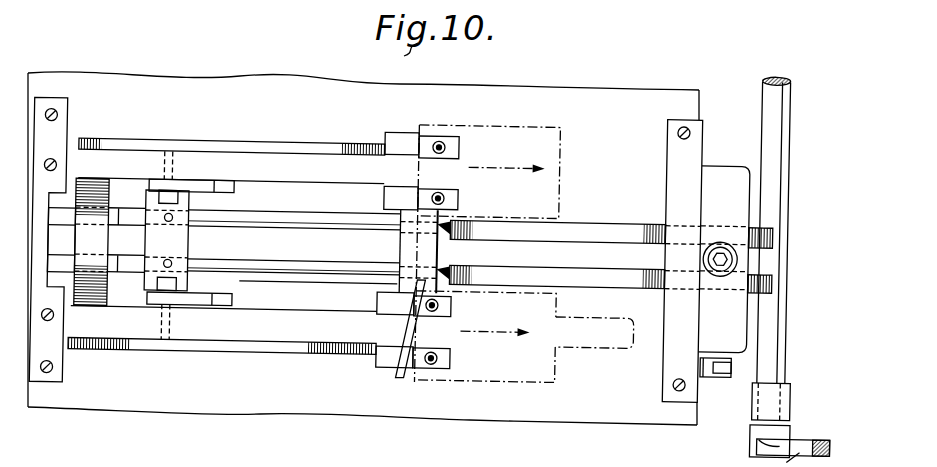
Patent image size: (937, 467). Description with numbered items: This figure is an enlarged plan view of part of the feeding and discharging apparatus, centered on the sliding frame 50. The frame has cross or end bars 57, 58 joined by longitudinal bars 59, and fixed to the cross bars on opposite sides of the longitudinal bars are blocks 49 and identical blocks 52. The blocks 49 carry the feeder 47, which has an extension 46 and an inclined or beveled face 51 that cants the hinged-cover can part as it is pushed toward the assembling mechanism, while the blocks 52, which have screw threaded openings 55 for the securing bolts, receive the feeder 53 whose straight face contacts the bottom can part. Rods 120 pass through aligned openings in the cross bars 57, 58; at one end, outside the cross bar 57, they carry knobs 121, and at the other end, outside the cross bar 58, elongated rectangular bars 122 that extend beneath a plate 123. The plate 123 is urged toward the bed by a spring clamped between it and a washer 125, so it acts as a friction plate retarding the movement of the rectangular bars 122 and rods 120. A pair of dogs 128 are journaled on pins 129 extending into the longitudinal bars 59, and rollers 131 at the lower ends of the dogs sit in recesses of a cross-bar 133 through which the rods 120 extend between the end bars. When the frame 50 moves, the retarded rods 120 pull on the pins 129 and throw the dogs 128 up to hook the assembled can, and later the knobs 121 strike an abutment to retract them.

The extension 46 is at (623, 345).
The feeder 47 is at (530, 363).
The blocks 49 is at (393, 355).
The sliding frame 50 is at (228, 347).
The beveled face 51 is at (403, 333).
The blocks 52 is at (392, 193).
The feeder 53 is at (535, 148).
The screw threaded openings 55 is at (435, 360).
The cross bar 57 is at (88, 193).
The cross bar 58 is at (413, 252).
The longitudinal bars 59 is at (297, 323).
The rods 120 is at (295, 222).
The knobs 121 is at (67, 262).
The rectangular bars 122 is at (557, 275).
The plate 123 is at (713, 178).
The washer 125 is at (733, 247).
The dogs 128 is at (213, 183).
The pins 129 is at (175, 152).
The rollers 131 is at (148, 200).
The cross-bar 133 is at (178, 242).